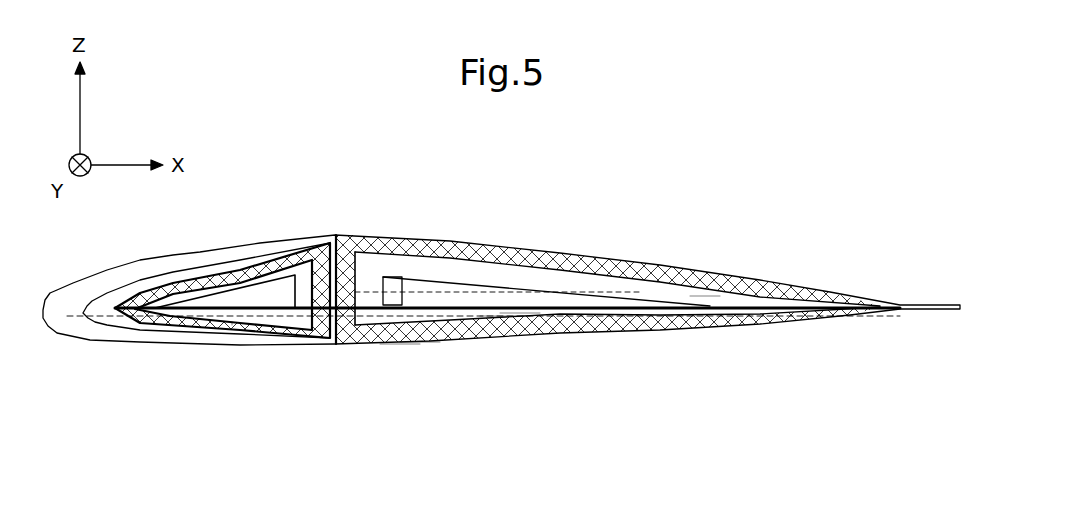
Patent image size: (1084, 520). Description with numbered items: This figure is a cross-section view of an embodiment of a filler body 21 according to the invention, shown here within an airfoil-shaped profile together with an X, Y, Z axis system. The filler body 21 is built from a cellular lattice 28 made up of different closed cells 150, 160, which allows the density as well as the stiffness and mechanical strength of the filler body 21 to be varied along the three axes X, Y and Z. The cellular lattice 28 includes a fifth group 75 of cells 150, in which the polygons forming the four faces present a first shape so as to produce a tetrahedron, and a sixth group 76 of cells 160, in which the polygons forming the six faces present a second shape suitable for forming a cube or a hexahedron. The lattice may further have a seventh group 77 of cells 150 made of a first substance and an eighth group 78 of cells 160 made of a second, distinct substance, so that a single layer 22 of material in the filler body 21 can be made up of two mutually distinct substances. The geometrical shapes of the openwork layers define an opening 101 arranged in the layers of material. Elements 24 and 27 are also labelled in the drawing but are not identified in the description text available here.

The filler body 21 is at (833, 273).
The single layer of material 22 is at (400, 286).
The upper skin 24 is at (565, 253).
The lower skin 27 is at (488, 275).
The cellular lattice 28 is at (453, 287).
The fifth group of cells 75 is at (420, 341).
The sixth group of cells 76 is at (518, 313).
The seventh group of cells 77 is at (228, 316).
The eighth group of cells 78 is at (686, 310).
The opening 101 is at (388, 343).
The cells 150 is at (232, 325).
The cells 160 is at (503, 316).